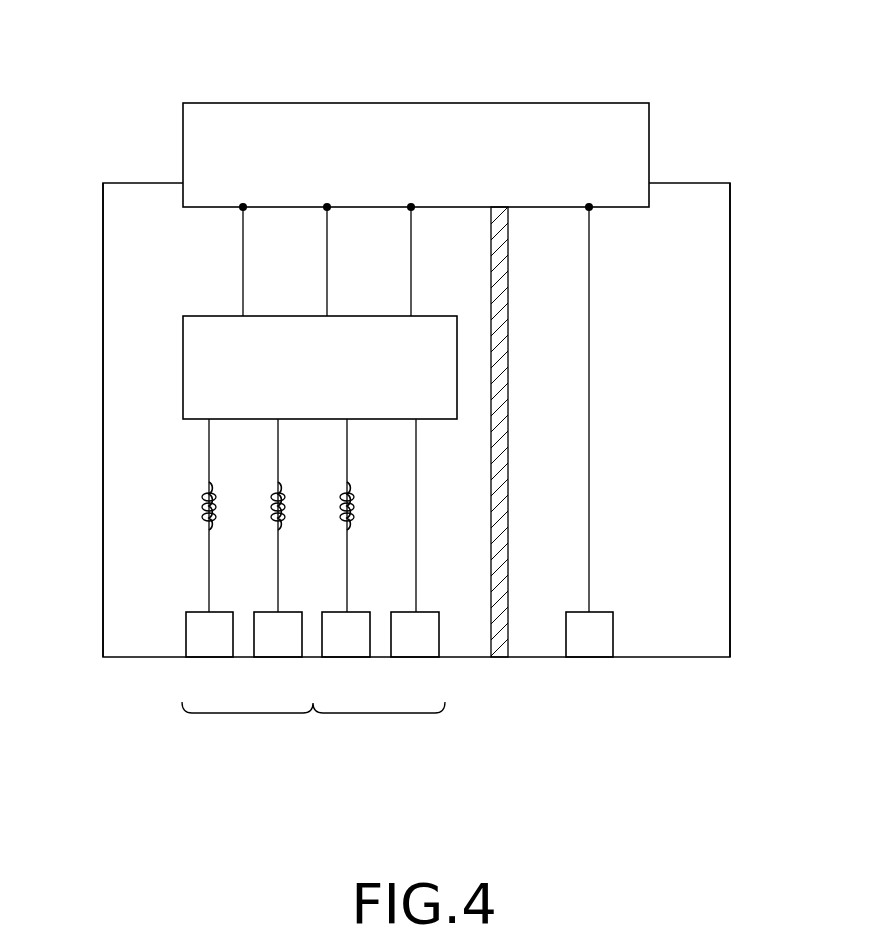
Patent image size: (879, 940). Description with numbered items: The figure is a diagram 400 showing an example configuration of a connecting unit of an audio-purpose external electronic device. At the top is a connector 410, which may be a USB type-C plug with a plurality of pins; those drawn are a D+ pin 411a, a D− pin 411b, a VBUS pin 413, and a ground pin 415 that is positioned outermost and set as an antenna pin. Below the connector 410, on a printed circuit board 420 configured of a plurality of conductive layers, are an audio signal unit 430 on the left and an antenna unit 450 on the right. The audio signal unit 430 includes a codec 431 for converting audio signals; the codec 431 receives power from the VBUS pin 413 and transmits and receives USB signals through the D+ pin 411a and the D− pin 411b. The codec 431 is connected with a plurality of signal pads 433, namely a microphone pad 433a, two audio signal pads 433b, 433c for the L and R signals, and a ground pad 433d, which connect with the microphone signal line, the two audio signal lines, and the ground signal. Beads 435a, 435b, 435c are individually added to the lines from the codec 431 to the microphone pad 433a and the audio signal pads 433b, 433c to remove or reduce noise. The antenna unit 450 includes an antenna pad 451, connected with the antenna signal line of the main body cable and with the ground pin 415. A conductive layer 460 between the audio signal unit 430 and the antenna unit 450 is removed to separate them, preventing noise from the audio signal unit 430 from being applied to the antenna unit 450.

The diagram 400 is at (88, 61).
The connector 410 is at (497, 103).
The D+ pin 411a is at (243, 168).
The D− pin 411b is at (327, 168).
The VBUS pin 413 is at (410, 168).
The ground pin 415 is at (588, 168).
The printed circuit board 420 is at (730, 297).
The audio signal unit 430 is at (116, 407).
The codec 431 is at (281, 316).
The signal pads 433 is at (313, 725).
The microphone pad 433a is at (211, 657).
The audio signal pad (L) 433b is at (280, 657).
The audio signal pad (R) 433c is at (349, 657).
The ground pad 433d is at (418, 657).
The bead 435a is at (204, 497).
The bead 435b is at (273, 497).
The bead 435c is at (342, 497).
The antenna unit 450 is at (708, 407).
The antenna pad 451 is at (613, 634).
The conductive layer 460 is at (500, 623).